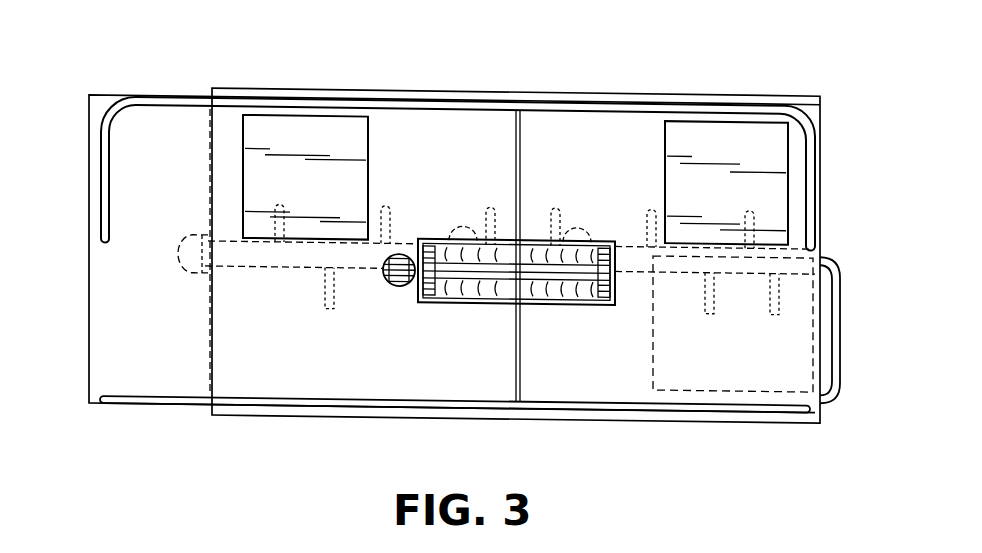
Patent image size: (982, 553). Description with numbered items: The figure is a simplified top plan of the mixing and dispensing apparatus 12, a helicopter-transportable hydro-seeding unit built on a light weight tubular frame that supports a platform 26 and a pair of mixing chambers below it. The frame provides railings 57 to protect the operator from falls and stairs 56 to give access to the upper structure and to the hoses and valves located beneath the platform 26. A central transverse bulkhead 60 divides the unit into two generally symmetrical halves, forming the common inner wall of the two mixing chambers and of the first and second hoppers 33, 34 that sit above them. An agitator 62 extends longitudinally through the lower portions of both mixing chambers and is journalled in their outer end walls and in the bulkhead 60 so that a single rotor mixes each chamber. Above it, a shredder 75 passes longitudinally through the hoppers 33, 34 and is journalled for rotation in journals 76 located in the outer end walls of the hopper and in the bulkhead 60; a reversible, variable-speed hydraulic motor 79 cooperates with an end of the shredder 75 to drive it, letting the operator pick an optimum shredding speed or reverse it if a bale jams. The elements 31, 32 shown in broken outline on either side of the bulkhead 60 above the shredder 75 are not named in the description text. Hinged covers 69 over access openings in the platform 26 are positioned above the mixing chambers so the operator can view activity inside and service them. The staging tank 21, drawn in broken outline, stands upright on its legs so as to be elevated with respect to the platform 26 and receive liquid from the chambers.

The mixing and dispensing apparatus 12 is at (433, 65).
The staging tank 21 is at (690, 395).
The platform 26 is at (447, 156).
The left bearing 31 is at (464, 226).
The right bearing 32 is at (580, 227).
The first hopper 33 is at (492, 305).
The second hopper 34 is at (562, 305).
The stairs 56 is at (840, 287).
The railings 57 is at (152, 95).
The central transverse bulkhead 60 is at (522, 152).
The agitator 62 is at (305, 272).
The hinged covers 69 is at (303, 142).
The shredder 75 is at (467, 252).
The journals 76 is at (440, 240).
The hydraulic motor 79 is at (398, 288).